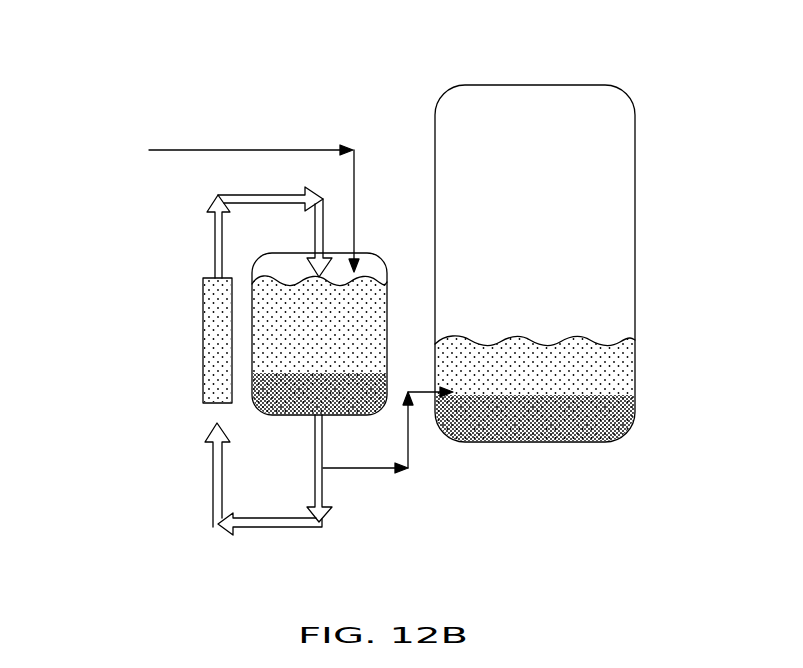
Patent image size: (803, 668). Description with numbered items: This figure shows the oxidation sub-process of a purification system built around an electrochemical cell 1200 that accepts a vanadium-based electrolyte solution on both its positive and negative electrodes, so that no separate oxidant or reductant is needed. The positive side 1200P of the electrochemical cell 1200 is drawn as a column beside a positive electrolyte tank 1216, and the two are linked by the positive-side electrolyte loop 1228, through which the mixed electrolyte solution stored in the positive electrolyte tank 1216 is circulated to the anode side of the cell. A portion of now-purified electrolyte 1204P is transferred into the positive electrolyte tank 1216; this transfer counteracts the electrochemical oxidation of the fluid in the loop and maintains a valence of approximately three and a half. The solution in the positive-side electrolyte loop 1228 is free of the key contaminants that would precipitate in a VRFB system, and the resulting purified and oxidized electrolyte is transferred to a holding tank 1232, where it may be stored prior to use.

The holding tank 1232 is at (573, 85).
The positive electrolyte tank 1216 is at (360, 250).
The positive-side electrolyte loop 1228 is at (282, 187).
The purified electrolyte solution 1204P is at (177, 152).
The electrochemical cell 1200 is at (188, 368).
The positive side 1200P is at (202, 392).